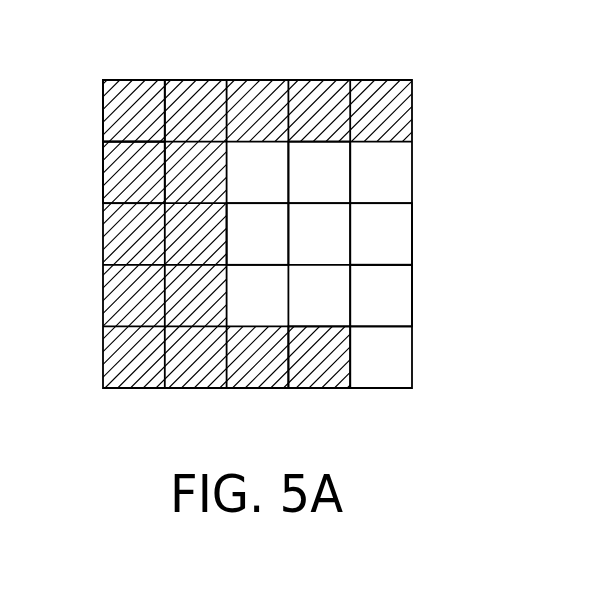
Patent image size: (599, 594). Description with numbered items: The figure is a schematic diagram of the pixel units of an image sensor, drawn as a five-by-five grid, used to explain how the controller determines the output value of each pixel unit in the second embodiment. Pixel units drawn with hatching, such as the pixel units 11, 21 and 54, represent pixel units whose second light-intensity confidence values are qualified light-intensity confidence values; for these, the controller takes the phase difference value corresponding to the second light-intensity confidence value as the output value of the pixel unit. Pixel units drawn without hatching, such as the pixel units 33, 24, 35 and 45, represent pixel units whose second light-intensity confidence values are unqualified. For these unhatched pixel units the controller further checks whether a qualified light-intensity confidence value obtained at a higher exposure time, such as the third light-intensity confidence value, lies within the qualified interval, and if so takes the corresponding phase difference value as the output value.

The pixel unit 11 is at (133, 112).
The pixel unit 33 is at (253, 172).
The pixel unit 21 is at (133, 175).
The pixel unit 24 is at (317, 177).
The pixel unit 35 is at (383, 236).
The pixel unit 45 is at (383, 295).
The pixel unit 54 is at (317, 358).